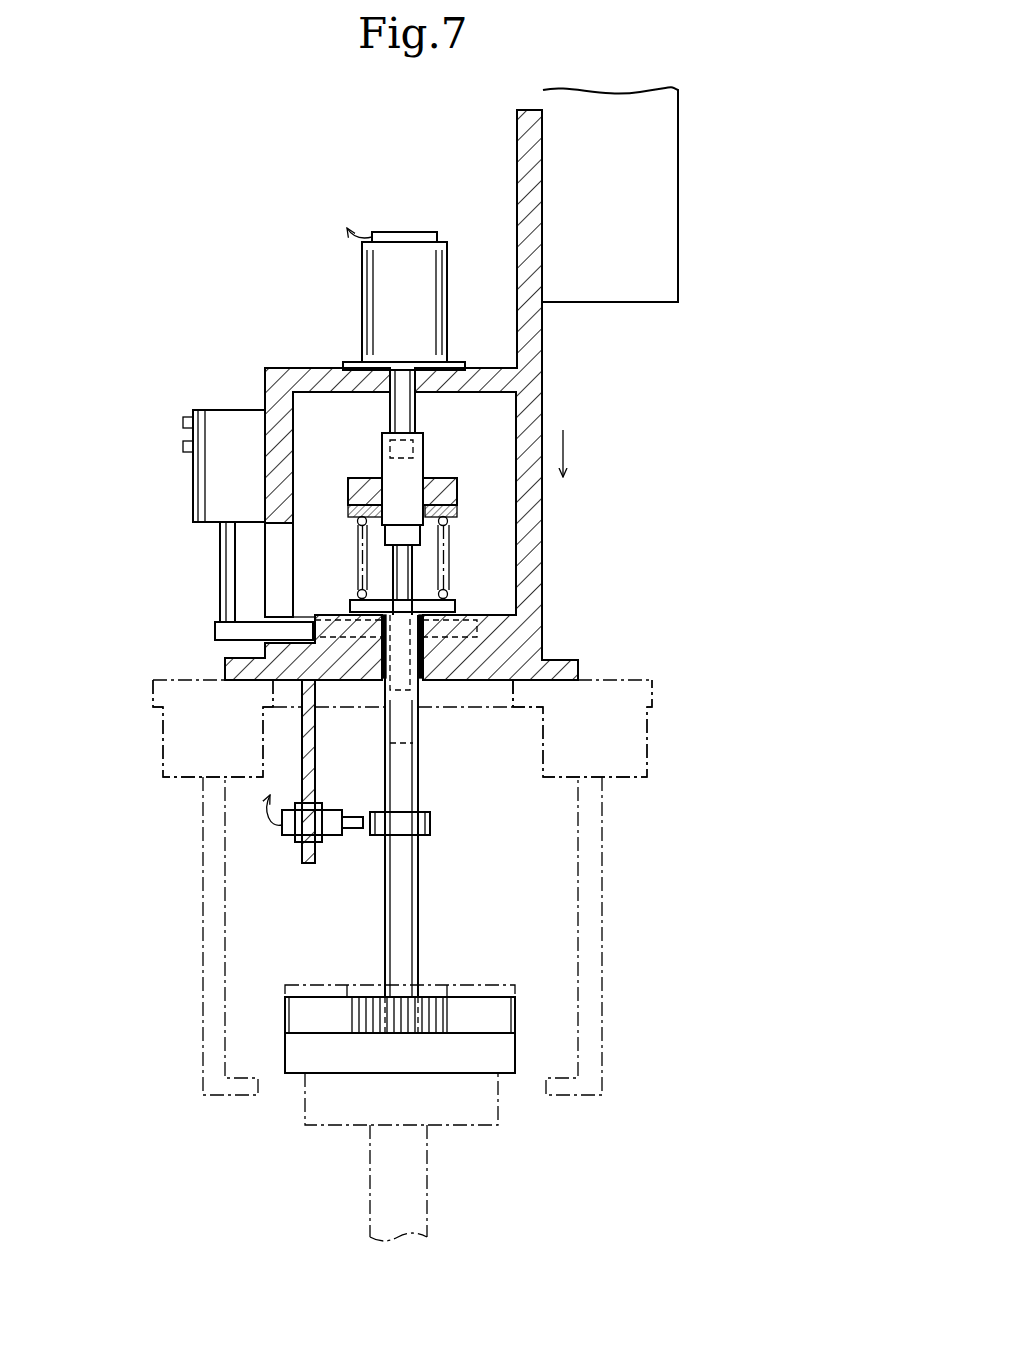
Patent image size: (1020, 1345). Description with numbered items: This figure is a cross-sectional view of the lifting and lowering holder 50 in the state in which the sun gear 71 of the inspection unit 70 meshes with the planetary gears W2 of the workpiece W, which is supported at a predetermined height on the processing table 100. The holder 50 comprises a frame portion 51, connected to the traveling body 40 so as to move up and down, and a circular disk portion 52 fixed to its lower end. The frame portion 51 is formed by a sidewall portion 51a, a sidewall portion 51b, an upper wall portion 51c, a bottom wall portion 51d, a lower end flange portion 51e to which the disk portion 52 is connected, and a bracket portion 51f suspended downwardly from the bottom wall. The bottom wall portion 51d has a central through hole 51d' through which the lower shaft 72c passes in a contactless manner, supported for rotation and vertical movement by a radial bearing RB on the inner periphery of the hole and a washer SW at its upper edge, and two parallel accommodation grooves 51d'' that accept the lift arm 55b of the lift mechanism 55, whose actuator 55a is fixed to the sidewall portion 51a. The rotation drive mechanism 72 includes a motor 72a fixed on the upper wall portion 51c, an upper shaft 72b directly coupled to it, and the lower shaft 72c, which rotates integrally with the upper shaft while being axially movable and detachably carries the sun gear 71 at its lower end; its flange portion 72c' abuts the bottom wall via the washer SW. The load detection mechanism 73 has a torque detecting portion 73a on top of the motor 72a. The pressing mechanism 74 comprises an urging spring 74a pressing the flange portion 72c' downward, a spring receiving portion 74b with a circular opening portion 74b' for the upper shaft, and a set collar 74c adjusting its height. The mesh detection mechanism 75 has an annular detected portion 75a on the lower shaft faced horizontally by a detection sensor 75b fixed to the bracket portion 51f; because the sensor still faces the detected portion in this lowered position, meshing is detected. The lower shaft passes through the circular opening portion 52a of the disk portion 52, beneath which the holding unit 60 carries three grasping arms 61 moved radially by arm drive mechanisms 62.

The traveling body 40 is at (678, 238).
The lifting and lowering holder 50 is at (444, 486).
The frame portion 51 is at (271, 366).
The sidewall portion 51a is at (291, 470).
The sidewall portion 51b is at (516, 570).
The upper wall portion 51c is at (318, 385).
The bottom wall portion 51d is at (495, 610).
The through hole 51d' is at (458, 729).
The accommodation grooves 51d'' is at (388, 596).
The lower end flange portion 51e is at (568, 660).
The bracket portion 51f is at (315, 767).
The circular disk portion 52 is at (638, 681).
The circular opening portion 52a is at (506, 708).
The lift mechanism 55 is at (210, 525).
The actuator 55a is at (215, 490).
The lift arm 55b is at (253, 628).
The holding unit 60 is at (414, 887).
The grasping arms 61 is at (203, 970).
The arm drive mechanisms 62 is at (160, 762).
The inspection unit 70 is at (432, 770).
The sun gear 71 is at (430, 1003).
The rotation drive mechanism 72 is at (426, 585).
The motor 72a is at (425, 262).
The upper shaft 72b is at (423, 452).
The lower shaft 72c is at (447, 824).
The flange portion 72c' is at (447, 641).
The load detection mechanism 73 is at (403, 190).
The torque detecting portion 73a is at (411, 232).
The pressing mechanism 74 is at (502, 498).
The urging spring 74a is at (460, 545).
The spring receiving portion 74b is at (429, 484).
The circular opening portion 74b' is at (356, 448).
The set collar 74c is at (450, 478).
The mesh detection mechanism 75 is at (399, 861).
The detected portion 75a is at (430, 826).
The detection sensor 75b is at (322, 843).
The processing table 100 is at (423, 1083).
The radial bearing RB is at (425, 664).
The washer SW is at (455, 606).
The workpiece W is at (287, 984).
The planetary gears W2 is at (325, 1005).